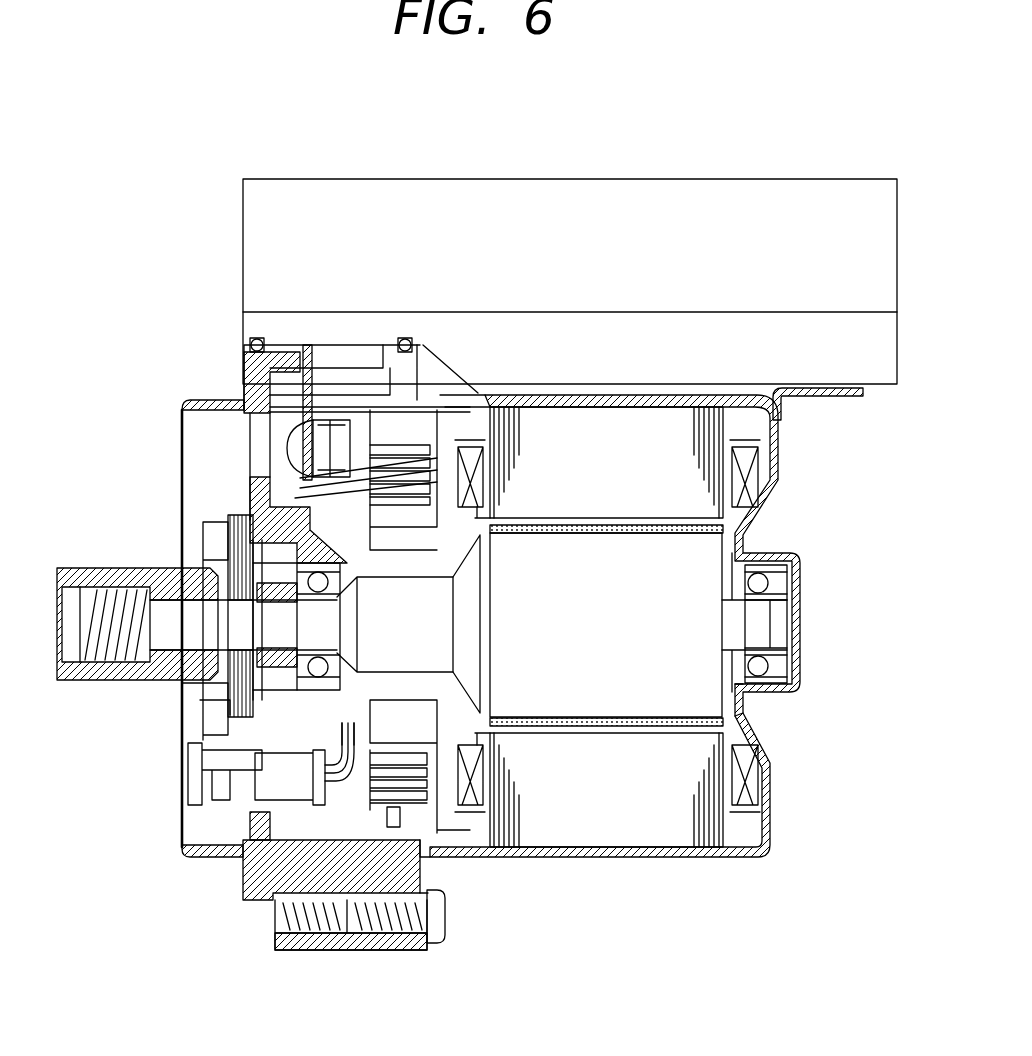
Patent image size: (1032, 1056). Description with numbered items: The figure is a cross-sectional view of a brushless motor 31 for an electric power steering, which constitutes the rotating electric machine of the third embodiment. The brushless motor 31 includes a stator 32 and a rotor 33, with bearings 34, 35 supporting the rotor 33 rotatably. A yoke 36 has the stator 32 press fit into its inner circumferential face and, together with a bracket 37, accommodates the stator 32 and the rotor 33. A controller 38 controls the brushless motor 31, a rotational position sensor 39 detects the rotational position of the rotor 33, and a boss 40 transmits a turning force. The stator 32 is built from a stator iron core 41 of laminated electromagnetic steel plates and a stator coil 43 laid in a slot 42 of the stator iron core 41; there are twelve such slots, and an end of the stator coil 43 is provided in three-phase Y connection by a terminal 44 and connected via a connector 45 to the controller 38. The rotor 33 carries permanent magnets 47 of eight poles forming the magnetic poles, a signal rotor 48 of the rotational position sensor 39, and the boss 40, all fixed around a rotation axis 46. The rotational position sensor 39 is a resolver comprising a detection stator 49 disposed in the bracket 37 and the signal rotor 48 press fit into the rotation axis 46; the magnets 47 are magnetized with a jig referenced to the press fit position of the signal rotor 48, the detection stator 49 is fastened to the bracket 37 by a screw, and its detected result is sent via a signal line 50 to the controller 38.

The brushless motor 31 is at (415, 178).
The stator 32 is at (662, 680).
The rotor 33 is at (695, 555).
The bearing 34 is at (290, 573).
The bearing 35 is at (772, 655).
The yoke 36 is at (548, 857).
The bracket 37 is at (243, 897).
The controller 38 is at (843, 217).
The rotational position sensor 39 is at (155, 586).
The boss 40 is at (58, 678).
The stator iron core 41 is at (705, 832).
The slot 42 is at (745, 795).
The stator coil 43 is at (752, 792).
The terminal 44 is at (355, 518).
The connector 45 is at (310, 380).
The rotation axis 46 is at (737, 700).
The permanent magnet 47 is at (742, 534).
The signal rotor 48 is at (228, 575).
The detection stator 49 is at (217, 540).
The signal line 50 is at (352, 723).